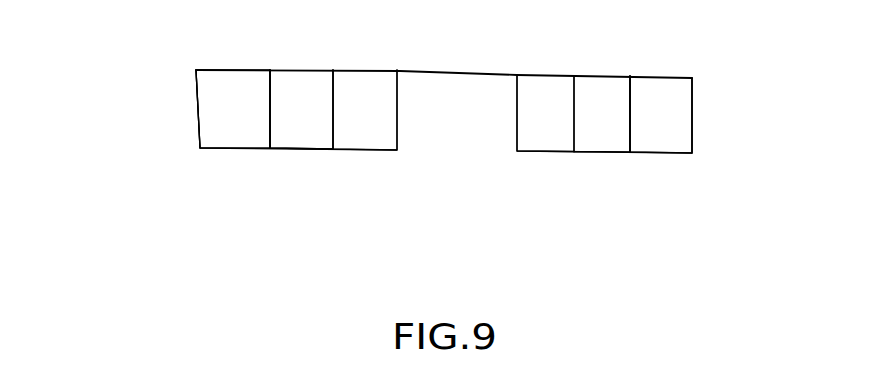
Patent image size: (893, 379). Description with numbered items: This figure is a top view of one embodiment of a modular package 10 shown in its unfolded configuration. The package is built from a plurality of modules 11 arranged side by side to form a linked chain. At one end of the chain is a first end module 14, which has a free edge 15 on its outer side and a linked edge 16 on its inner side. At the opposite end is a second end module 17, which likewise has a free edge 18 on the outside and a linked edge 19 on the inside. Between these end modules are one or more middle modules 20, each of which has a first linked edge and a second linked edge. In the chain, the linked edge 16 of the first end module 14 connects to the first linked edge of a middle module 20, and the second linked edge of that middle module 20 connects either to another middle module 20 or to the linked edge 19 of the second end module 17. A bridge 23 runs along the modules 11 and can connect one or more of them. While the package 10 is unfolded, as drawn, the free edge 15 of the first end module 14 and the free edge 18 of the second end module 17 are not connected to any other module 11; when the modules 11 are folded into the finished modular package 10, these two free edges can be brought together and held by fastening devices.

The modular package 10 is at (123, 68).
The modules 11 is at (302, 128).
The first end module 14 is at (215, 107).
The free edge 15 is at (198, 67).
The linked edge 16 is at (267, 70).
The second end module 17 is at (668, 118).
The free edge 18 is at (692, 79).
The linked edge 19 is at (630, 77).
The middle modules 20 is at (303, 89).
The bridge 23 is at (456, 70).